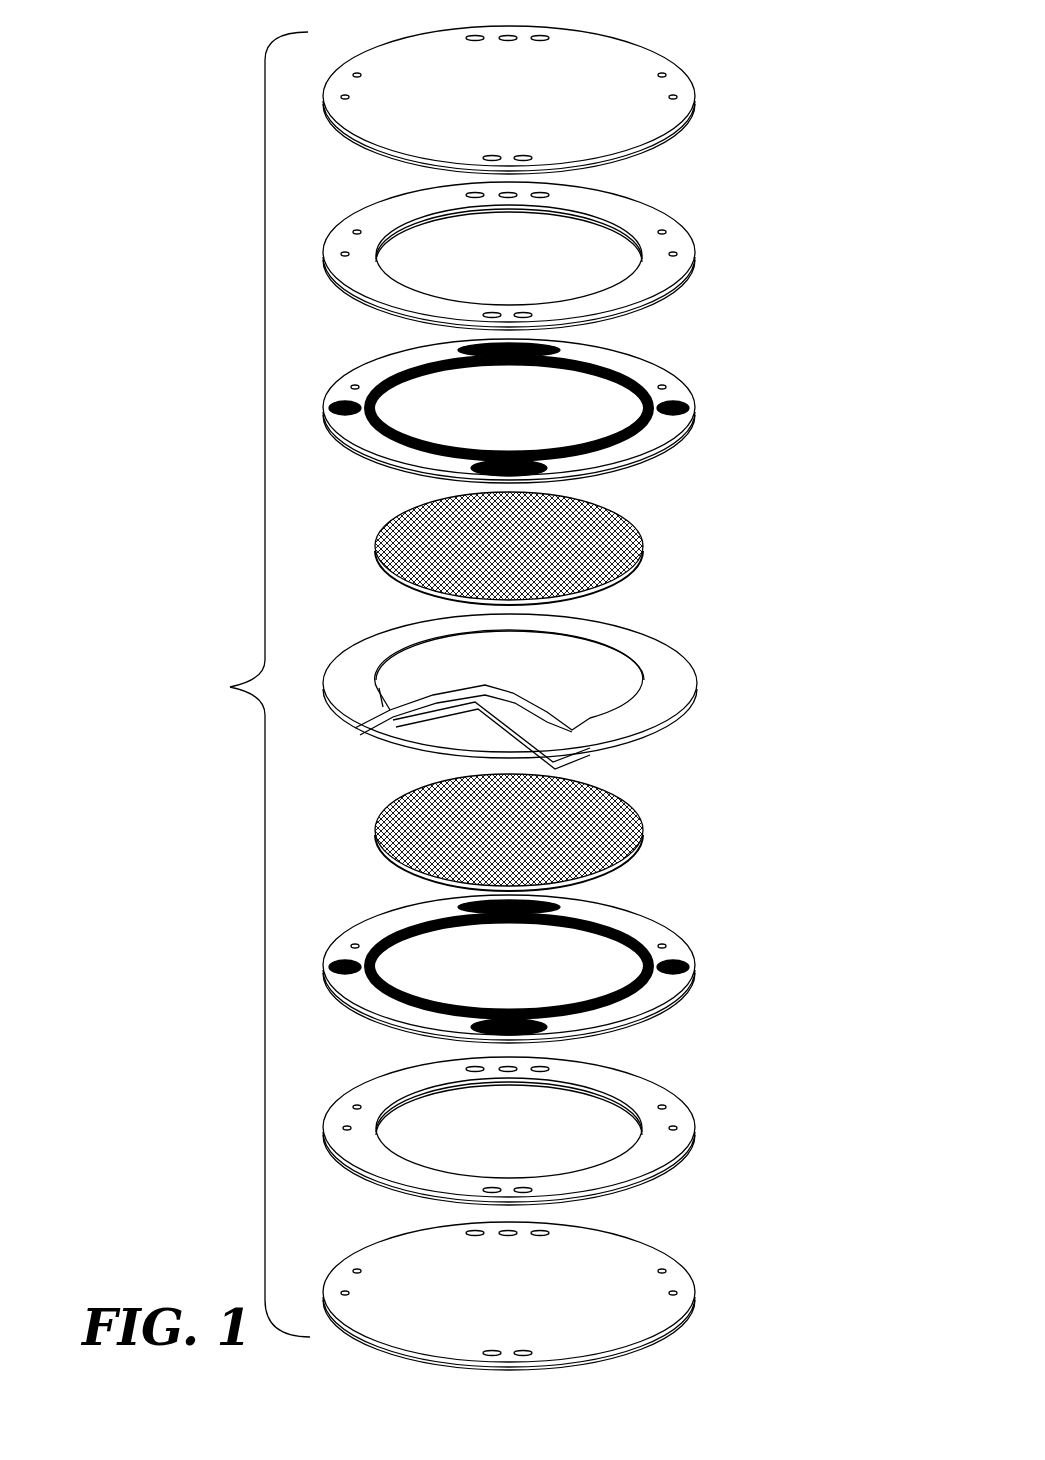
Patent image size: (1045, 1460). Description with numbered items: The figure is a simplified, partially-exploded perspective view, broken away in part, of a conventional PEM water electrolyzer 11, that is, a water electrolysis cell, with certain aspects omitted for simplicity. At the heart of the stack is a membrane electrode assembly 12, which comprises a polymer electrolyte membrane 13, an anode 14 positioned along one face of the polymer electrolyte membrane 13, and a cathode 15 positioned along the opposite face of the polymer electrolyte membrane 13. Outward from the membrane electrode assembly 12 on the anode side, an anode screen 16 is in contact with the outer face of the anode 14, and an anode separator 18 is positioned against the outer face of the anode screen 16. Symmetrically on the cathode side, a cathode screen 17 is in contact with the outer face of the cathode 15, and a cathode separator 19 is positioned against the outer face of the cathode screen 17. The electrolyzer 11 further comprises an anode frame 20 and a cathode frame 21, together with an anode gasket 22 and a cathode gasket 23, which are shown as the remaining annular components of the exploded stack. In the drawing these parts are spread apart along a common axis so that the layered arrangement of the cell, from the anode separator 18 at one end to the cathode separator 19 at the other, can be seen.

The PEM water electrolyzer 11 is at (215, 703).
The membrane electrode assembly 12 is at (557, 688).
The polymer electrolyte membrane 13 is at (524, 688).
The anode 14 is at (577, 663).
The cathode 15 is at (440, 740).
The anode screen 16 is at (627, 517).
The cathode screen 17 is at (617, 803).
The anode separator 18 is at (630, 78).
The cathode separator 19 is at (628, 1268).
The anode frame 20 is at (645, 372).
The cathode frame 21 is at (650, 933).
The anode gasket 22 is at (643, 218).
The cathode gasket 23 is at (637, 1090).